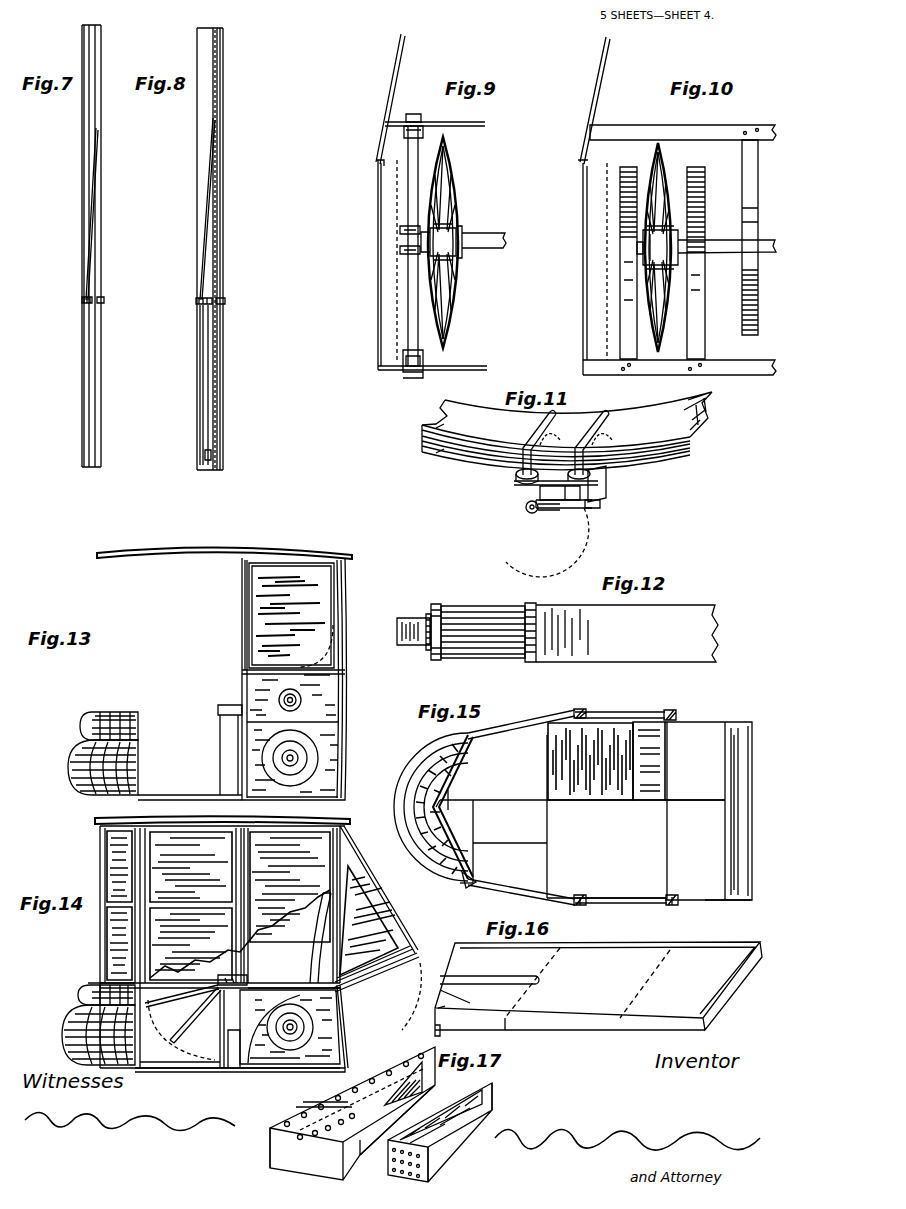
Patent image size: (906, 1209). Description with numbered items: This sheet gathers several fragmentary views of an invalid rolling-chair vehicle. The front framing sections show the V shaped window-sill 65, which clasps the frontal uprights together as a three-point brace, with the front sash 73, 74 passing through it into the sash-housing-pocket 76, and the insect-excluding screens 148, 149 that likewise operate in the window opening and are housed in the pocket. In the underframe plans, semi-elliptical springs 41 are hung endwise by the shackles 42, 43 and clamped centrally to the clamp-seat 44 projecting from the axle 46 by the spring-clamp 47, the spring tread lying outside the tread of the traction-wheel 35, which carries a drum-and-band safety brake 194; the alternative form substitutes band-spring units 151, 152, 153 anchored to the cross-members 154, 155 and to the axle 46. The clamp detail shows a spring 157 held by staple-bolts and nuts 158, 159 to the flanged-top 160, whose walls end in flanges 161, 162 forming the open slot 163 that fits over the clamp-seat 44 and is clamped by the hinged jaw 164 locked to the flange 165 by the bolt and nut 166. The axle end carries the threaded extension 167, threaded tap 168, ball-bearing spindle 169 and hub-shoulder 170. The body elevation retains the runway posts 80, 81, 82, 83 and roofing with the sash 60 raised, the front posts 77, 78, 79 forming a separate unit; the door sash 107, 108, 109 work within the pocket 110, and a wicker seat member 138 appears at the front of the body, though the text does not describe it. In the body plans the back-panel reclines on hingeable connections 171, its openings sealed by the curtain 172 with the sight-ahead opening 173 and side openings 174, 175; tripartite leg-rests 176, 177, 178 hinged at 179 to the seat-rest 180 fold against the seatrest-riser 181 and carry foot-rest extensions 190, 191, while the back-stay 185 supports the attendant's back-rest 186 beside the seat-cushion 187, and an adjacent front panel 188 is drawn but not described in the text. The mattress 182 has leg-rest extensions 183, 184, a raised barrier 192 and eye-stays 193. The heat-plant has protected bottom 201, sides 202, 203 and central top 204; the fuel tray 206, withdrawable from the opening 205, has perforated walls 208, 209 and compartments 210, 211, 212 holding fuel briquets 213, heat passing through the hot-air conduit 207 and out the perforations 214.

In FIG. 7, the sash 73 is at (90, 108).
In FIG. 8, the sash 73 is at (207, 340).
In FIG. 14, the sash 73 is at (123, 853).
In FIG. 7, the sash 74 is at (93, 196).
In FIG. 8, the sash 74 is at (210, 398).
In FIG. 14, the sash 74 is at (118, 928).
In FIG. 7, the V shaped window-sill 65 is at (82, 300).
In FIG. 8, the V shaped window-sill 65 is at (197, 301).
In FIG. 13, the V shaped window-sill 65 is at (113, 712).
In FIG. 14, the V shaped window-sill 65 is at (95, 988).
In FIG. 15, the V shaped window-sill 65 is at (445, 766).
In FIG. 8, the adjustable screen 148 is at (214, 118).
In FIG. 8, the adjustable screen 149 is at (222, 270).
In FIG. 9, the semi-elliptical spring 41 is at (413, 157).
In FIG. 9, the shackle 42 is at (412, 116).
In FIG. 9, the shackle 43 is at (412, 374).
In FIG. 9, the traction-wheel 35 is at (455, 332).
In FIG. 10, the traction-wheel 35 is at (655, 310).
In FIG. 9, the safety brake 194 is at (458, 232).
In FIG. 10, the safety brake 194 is at (673, 270).
In FIG. 9, the axle 46 is at (487, 244).
In FIG. 10, the axle 46 is at (715, 246).
In FIG. 12, the axle 46 is at (640, 624).
In FIG. 9, the spring-clamp 47 is at (403, 230).
In FIG. 10, the spring-clamp 47 is at (620, 250).
In FIG. 11, the spring-clamp 47 is at (586, 422).
In FIG. 10, the band-spring unit 151 is at (629, 168).
In FIG. 10, the band-spring unit 152 is at (700, 205).
In FIG. 10, the band-spring unit 153 is at (750, 270).
In FIG. 10, the cross-member 154 is at (714, 136).
In FIG. 10, the cross-member 155 is at (760, 372).
In FIG. 11, the spring 157 is at (665, 420).
In FIG. 11, the staple-bolt and nut 158 is at (525, 450).
In FIG. 11, the staple-bolt and nut 159 is at (640, 458).
In FIG. 11, the flanged-top 160 is at (522, 481).
In FIG. 11, the flange 161 is at (538, 487).
In FIG. 11, the flange 162 is at (560, 506).
In FIG. 11, the open slot 163 is at (558, 500).
In FIG. 11, the hinged jaw 164 is at (600, 512).
In FIG. 11, the flange 165 is at (606, 490).
In FIG. 11, the bolt and nut 166 is at (598, 505).
In FIG. 11, the clamp-seat 44 is at (531, 514).
In FIG. 12, the clamp-seat 44 is at (405, 618).
In FIG. 12, the threaded extension 167 is at (430, 648).
In FIG. 12, the threaded tap 168 is at (440, 610).
In FIG. 12, the ball-bearing spindle 169 is at (466, 642).
In FIG. 15, the ball-bearing spindle 169 is at (696, 823).
In FIG. 12, the hub-shoulder 170 is at (528, 605).
In FIG. 13, the sash 60 is at (291, 615).
In FIG. 14, the sash 60 is at (290, 887).
In FIG. 13, the runway post 82 is at (245, 590).
In FIG. 15, the runway post 82 is at (579, 905).
In FIG. 13, the runway post 83 is at (340, 592).
In FIG. 15, the runway post 83 is at (670, 905).
In FIG. 13, the wicker basket 138 is at (72, 766).
In FIG. 14, the wicker basket 138 is at (65, 1037).
In FIG. 14, the sash-housing-pocket 76 is at (318, 1031).
In FIG. 14, the sash 108 is at (191, 867).
In FIG. 14, the sash 109 is at (191, 944).
In FIG. 14, the sash 107 is at (240, 934).
In FIG. 14, the pocket 110 is at (155, 1069).
In FIG. 14, the hingeable connection 171 is at (340, 992).
In FIG. 14, the curtain 172 is at (397, 946).
In FIG. 15, the curtain 172 is at (732, 780).
In FIG. 14, the elongated opening 173 is at (352, 862).
In FIG. 14, the opening 174 is at (360, 906).
In FIG. 15, the opening 174 is at (696, 723).
In FIG. 15, the opening 175 is at (706, 901).
In FIG. 14, the leg-rest 176 is at (217, 1043).
In FIG. 14, the leg-rest 177 is at (198, 1018).
In FIG. 15, the leg-rest 177 is at (510, 841).
In FIG. 14, the leg-rest 178 is at (185, 1002).
In FIG. 15, the leg-rest 178 is at (490, 868).
In FIG. 14, the hinge 179 is at (226, 994).
In FIG. 14, the seat-rest 180 is at (246, 975).
In FIG. 15, the seat-rest 180 is at (607, 869).
In FIG. 14, the seatrest-riser 181 is at (232, 1062).
In FIG. 14, the back-stay 185 is at (374, 972).
In FIG. 15, the back-stay 185 is at (670, 796).
In FIG. 14, the back-rest 186 is at (282, 998).
In FIG. 15, the back-rest 186 is at (646, 730).
In FIG. 14, the seat-cushion 187 is at (306, 983).
In FIG. 15, the seat-cushion 187 is at (585, 760).
In FIG. 15, the front panel 188 is at (551, 816).
In FIG. 15, the foot-rest extension 190 is at (448, 816).
In FIG. 15, the foot-rest extension 191 is at (456, 889).
In FIG. 15, the front window-and-sash-runway post 77 is at (490, 728).
In FIG. 15, the front window-and-sash-runway post 78 is at (420, 790).
In FIG. 15, the front window-and-sash-runway post 79 is at (468, 884).
In FIG. 15, the runway post 80 is at (577, 712).
In FIG. 15, the runway post 81 is at (673, 716).
In FIG. 16, the mattress 182 is at (720, 1000).
In FIG. 16, the leg-rest extension 183 is at (472, 961).
In FIG. 16, the leg-rest extension 184 is at (460, 995).
In FIG. 16, the raised barrier 192 is at (632, 950).
In FIG. 16, the eye-stay 193 is at (458, 1012).
In FIG. 17, the bottom 201 is at (373, 1150).
In FIG. 17, the side 202 is at (318, 1160).
In FIG. 17, the side 203 is at (392, 1076).
In FIG. 17, the central top 204 is at (376, 1113).
In FIG. 17, the opening 205 is at (392, 1101).
In FIG. 17, the fuel tray 206 is at (462, 1132).
In FIG. 17, the hot-air conduit 207 is at (420, 1044).
In FIG. 17, the perforated wall 208 is at (441, 1115).
In FIG. 17, the perforated wall 209 is at (416, 1168).
In FIG. 17, the compartment 210 is at (435, 1160).
In FIG. 17, the compartment 211 is at (445, 1148).
In FIG. 17, the compartment 212 is at (440, 1125).
In FIG. 17, the fuel briquet 213 is at (466, 1110).
In FIG. 17, the perforations 214 is at (283, 1145).